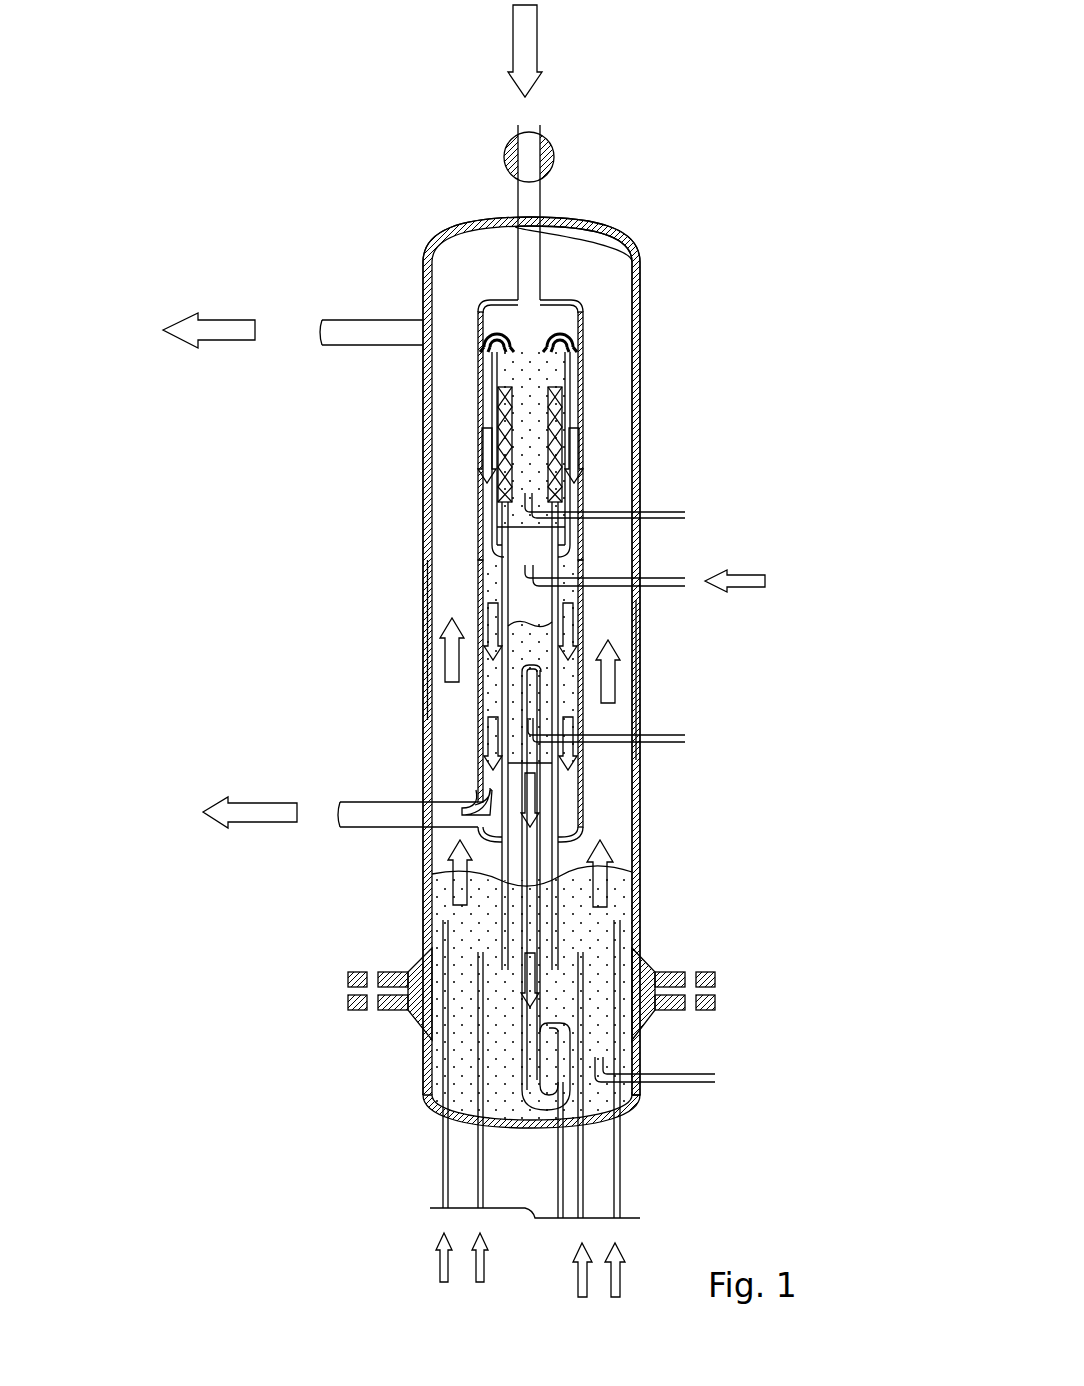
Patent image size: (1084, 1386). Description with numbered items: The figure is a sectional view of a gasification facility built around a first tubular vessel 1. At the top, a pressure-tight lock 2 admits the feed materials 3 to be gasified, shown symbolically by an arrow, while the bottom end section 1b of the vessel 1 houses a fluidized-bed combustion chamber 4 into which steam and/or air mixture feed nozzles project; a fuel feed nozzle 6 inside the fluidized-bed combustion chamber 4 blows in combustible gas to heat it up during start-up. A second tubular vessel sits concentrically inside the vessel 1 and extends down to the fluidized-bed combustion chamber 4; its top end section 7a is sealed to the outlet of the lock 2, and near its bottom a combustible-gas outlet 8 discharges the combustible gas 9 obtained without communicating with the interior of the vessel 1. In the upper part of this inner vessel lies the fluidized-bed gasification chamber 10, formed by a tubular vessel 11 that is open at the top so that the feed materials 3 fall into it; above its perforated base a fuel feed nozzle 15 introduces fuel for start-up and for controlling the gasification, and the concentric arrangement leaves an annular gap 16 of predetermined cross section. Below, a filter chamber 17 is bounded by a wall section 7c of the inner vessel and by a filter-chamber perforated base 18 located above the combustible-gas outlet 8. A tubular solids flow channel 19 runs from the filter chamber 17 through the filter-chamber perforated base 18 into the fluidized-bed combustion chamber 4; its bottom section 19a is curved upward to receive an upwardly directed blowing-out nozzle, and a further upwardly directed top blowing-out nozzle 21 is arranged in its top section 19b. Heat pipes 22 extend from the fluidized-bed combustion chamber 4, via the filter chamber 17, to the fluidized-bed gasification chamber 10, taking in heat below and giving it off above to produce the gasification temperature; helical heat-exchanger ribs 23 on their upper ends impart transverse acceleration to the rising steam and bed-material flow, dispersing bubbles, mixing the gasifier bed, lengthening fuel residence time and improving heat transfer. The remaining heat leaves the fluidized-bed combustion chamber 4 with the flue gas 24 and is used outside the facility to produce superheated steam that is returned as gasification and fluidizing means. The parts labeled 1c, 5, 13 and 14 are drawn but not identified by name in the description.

The first tubular vessel 1 is at (523, 636).
The bottom end section 1b is at (645, 1058).
The vessel wall section 1c is at (637, 683).
The pressure-tight lock 2 is at (548, 153).
The feed materials 3 is at (523, 60).
The fluidized-bed combustion chamber 4 is at (500, 1040).
The bottom tubes 5 is at (478, 1155).
The fuel feed nozzle 6 is at (713, 1080).
The top end section 7a is at (585, 322).
The wall section 7c is at (470, 728).
The combustible-gas outlet 8 is at (385, 800).
The combustible gas 9 is at (486, 330).
The fluidized-bed gasification chamber 10 is at (605, 437).
The tubular vessel 11 is at (483, 376).
The pipe 13 is at (655, 585).
The gas flow arrow 14 is at (732, 582).
The fuel feed nozzle 15 is at (665, 510).
The annular gap 16 is at (570, 395).
The filter chamber 17 is at (420, 643).
The filter-chamber perforated base 18 is at (573, 765).
The solids flow channel 19 is at (527, 887).
The bottom section 19a is at (557, 1052).
The top section 19b is at (532, 697).
The top blowing-out nozzle 21 is at (672, 747).
The heat pipes 22 is at (500, 580).
The helical heat-exchanger ribs 23 is at (498, 436).
The flue gas 24 is at (200, 333).